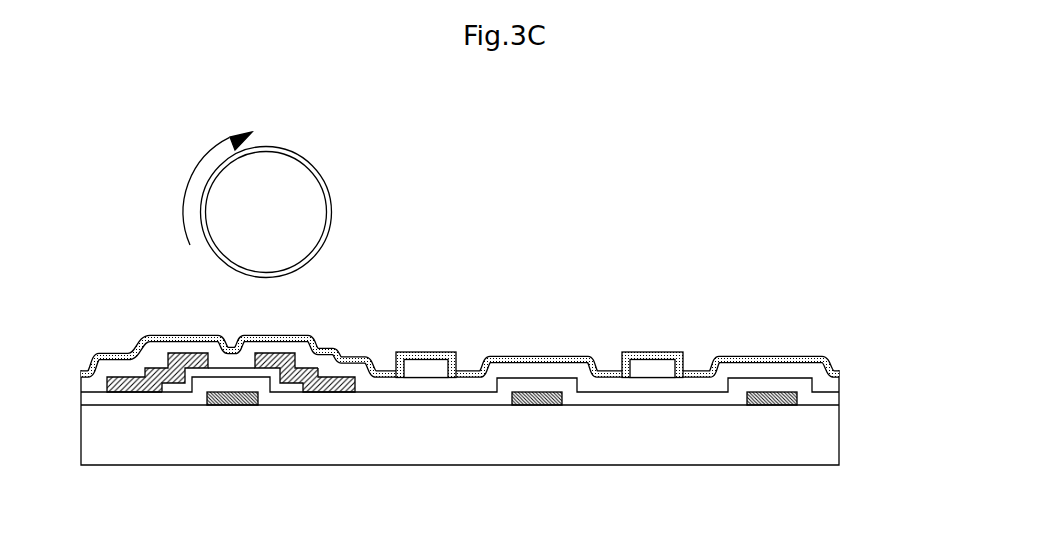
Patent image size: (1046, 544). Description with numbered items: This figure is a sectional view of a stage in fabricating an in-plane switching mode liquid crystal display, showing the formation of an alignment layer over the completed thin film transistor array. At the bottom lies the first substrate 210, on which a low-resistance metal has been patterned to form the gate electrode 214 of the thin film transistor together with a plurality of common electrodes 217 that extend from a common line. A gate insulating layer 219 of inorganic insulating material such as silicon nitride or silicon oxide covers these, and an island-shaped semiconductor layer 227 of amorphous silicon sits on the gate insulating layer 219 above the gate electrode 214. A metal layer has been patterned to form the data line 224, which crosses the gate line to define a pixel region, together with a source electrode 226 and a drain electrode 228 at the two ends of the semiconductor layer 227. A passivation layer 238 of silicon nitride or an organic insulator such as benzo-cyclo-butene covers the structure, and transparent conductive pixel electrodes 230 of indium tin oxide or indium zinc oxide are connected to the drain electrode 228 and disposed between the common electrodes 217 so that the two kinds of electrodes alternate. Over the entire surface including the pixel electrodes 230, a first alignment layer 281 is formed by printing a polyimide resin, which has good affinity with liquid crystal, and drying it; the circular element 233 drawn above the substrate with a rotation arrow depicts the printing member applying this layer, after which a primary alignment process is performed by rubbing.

The first substrate 210 is at (788, 447).
The gate electrode 214 is at (233, 406).
The common electrodes 217 is at (541, 400).
The gate insulating layer 219 is at (818, 358).
The data line 224 is at (127, 378).
The source electrode 226 is at (181, 373).
The semiconductor layer 227 is at (175, 387).
The drain electrode 228 is at (280, 358).
The pixel electrodes 230 is at (422, 369).
The roller 233 is at (303, 178).
The passivation layer 238 is at (827, 383).
The first alignment layer 281 is at (351, 358).